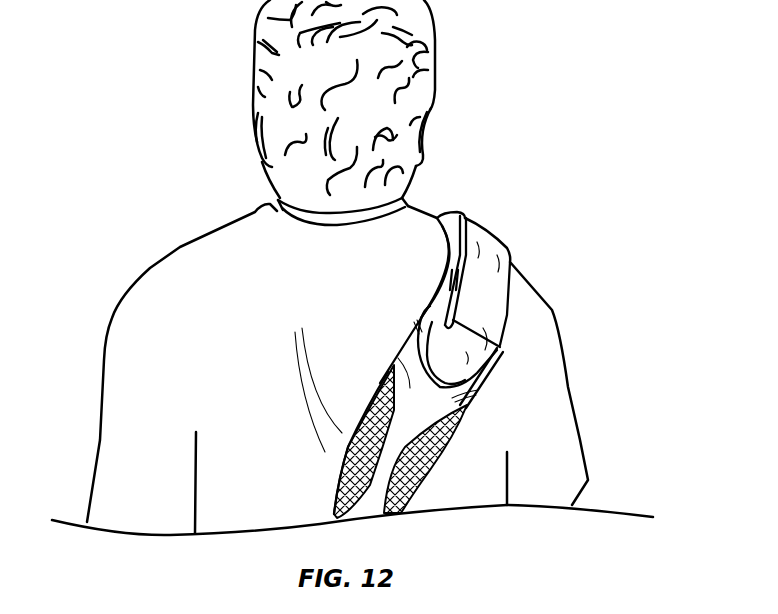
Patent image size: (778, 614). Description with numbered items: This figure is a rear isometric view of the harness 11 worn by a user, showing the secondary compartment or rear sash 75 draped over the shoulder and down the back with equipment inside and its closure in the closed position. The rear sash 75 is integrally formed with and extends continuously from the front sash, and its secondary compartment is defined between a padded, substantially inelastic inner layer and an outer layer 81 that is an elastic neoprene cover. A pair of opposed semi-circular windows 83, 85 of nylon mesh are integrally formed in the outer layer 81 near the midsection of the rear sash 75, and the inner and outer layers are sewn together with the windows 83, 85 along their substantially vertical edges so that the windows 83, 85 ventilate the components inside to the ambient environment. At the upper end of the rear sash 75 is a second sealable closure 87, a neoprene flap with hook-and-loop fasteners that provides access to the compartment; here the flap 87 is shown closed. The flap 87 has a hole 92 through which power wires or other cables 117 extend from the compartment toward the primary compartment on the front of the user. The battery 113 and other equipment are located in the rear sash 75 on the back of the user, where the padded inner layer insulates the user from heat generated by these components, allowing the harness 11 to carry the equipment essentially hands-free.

The harness 11 is at (496, 31).
The rear sash 75 is at (466, 441).
The outer layer 81 is at (373, 503).
The semi-circular window 83 is at (327, 500).
The semi-circular window 85 is at (428, 473).
The second sealable closure 87 is at (468, 373).
The hole 92 is at (480, 356).
The battery 113 is at (381, 383).
The power wires or other cables 117 is at (453, 295).